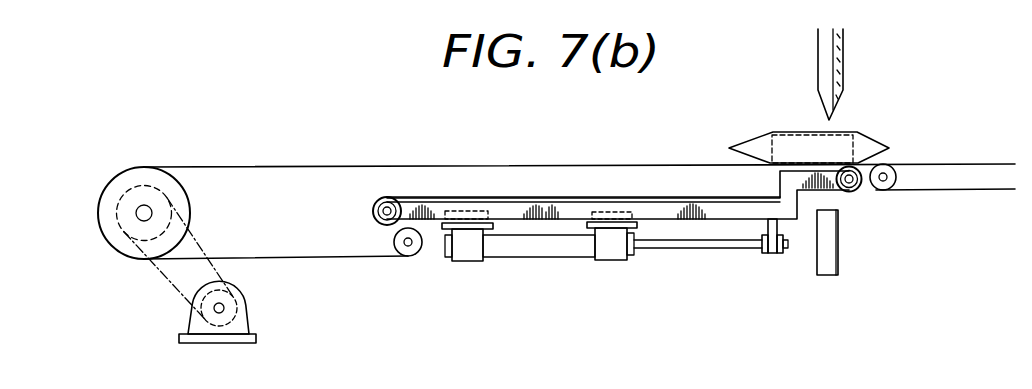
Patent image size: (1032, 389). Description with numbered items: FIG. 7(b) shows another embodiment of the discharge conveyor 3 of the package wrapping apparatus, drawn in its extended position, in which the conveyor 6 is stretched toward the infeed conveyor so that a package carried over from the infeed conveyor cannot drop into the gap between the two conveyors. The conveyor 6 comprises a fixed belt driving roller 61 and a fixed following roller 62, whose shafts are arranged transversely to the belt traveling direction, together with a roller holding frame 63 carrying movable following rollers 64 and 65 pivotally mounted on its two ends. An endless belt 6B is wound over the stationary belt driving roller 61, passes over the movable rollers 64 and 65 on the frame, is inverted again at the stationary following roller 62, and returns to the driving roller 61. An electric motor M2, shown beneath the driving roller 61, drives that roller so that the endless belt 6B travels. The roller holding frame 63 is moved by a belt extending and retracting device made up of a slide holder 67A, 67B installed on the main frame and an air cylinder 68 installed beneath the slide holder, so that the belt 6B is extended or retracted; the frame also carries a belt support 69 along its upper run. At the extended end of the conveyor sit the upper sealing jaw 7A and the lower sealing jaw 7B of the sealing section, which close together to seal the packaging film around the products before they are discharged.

The discharge conveyor 3 is at (944, 165).
The conveyor 6 is at (525, 268).
The endless belt 6B is at (422, 165).
The upper sealing jaw 7A is at (844, 66).
The lower sealing jaw 7B is at (840, 258).
The belt driving roller 61 is at (138, 168).
The following roller 62 is at (407, 256).
The roller holding frame 63 is at (722, 224).
The movable following roller 64 is at (866, 191).
The movable following roller 65 is at (373, 213).
The slide holder 67A is at (495, 261).
The slide holder 67B is at (588, 261).
The air cylinder 68 is at (620, 263).
The belt support 69 is at (557, 207).
The electric motor M2 is at (246, 316).